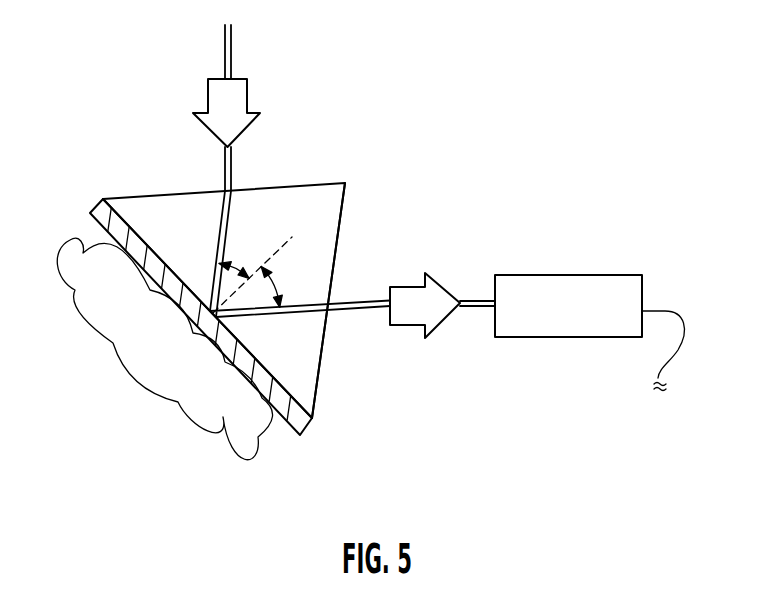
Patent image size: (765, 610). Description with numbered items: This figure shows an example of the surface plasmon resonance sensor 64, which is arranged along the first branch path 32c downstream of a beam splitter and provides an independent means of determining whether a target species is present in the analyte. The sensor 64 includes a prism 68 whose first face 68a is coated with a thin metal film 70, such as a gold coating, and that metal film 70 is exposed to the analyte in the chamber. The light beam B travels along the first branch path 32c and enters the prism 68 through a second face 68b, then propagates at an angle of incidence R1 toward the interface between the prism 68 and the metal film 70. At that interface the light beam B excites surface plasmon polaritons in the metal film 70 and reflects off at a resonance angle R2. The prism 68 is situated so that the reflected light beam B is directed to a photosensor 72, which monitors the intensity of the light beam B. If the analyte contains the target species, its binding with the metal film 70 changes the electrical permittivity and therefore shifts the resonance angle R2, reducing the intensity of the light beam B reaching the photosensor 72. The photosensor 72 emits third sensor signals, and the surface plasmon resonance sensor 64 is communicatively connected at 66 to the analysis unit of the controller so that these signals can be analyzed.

The first branch path 32c is at (231, 47).
The light beam B is at (247, 98).
The prism 68 is at (273, 201).
The first face 68a is at (282, 400).
The second face 68b is at (327, 184).
The angle of incidence R1 is at (240, 262).
The resonance angle R2 is at (278, 290).
The metal film 70 is at (291, 431).
The photosensor 72 is at (523, 337).
The communicative connection 66 is at (677, 351).
The surface plasmon resonance sensor 64 is at (381, 413).